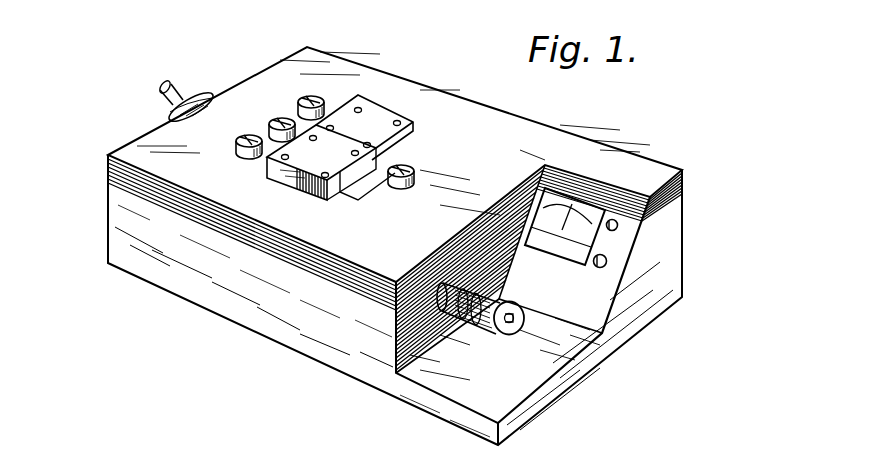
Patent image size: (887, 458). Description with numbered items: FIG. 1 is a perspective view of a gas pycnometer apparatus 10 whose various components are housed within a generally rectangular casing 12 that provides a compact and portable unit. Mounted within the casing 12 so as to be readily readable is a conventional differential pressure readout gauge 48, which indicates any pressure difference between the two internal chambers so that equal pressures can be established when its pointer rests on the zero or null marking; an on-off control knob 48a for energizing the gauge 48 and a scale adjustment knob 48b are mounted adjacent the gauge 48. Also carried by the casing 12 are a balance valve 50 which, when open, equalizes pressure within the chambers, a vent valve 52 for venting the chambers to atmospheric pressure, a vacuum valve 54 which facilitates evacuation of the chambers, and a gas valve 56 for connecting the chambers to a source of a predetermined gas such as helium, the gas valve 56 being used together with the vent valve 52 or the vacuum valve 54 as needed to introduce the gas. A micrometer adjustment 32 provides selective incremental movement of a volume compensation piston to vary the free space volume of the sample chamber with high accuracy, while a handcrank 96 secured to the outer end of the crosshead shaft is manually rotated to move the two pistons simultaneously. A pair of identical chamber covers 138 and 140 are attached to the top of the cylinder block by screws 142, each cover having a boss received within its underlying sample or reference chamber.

The gas pycnometer apparatus 10 is at (90, 141).
The casing 12 is at (208, 318).
The micrometer adjustment 32 is at (462, 326).
The differential pressure readout gauge 48 is at (585, 204).
The on-off control knob 48a is at (607, 262).
The scale adjustment knob 48b is at (618, 225).
The balance valve 50 is at (416, 173).
The vent valve 52 is at (276, 120).
The vacuum valve 54 is at (236, 152).
The gas valve 56 is at (316, 100).
The handcrank 96 is at (207, 92).
The chamber cover 138 is at (300, 168).
The chamber cover 140 is at (414, 124).
The screws 142 is at (397, 121).